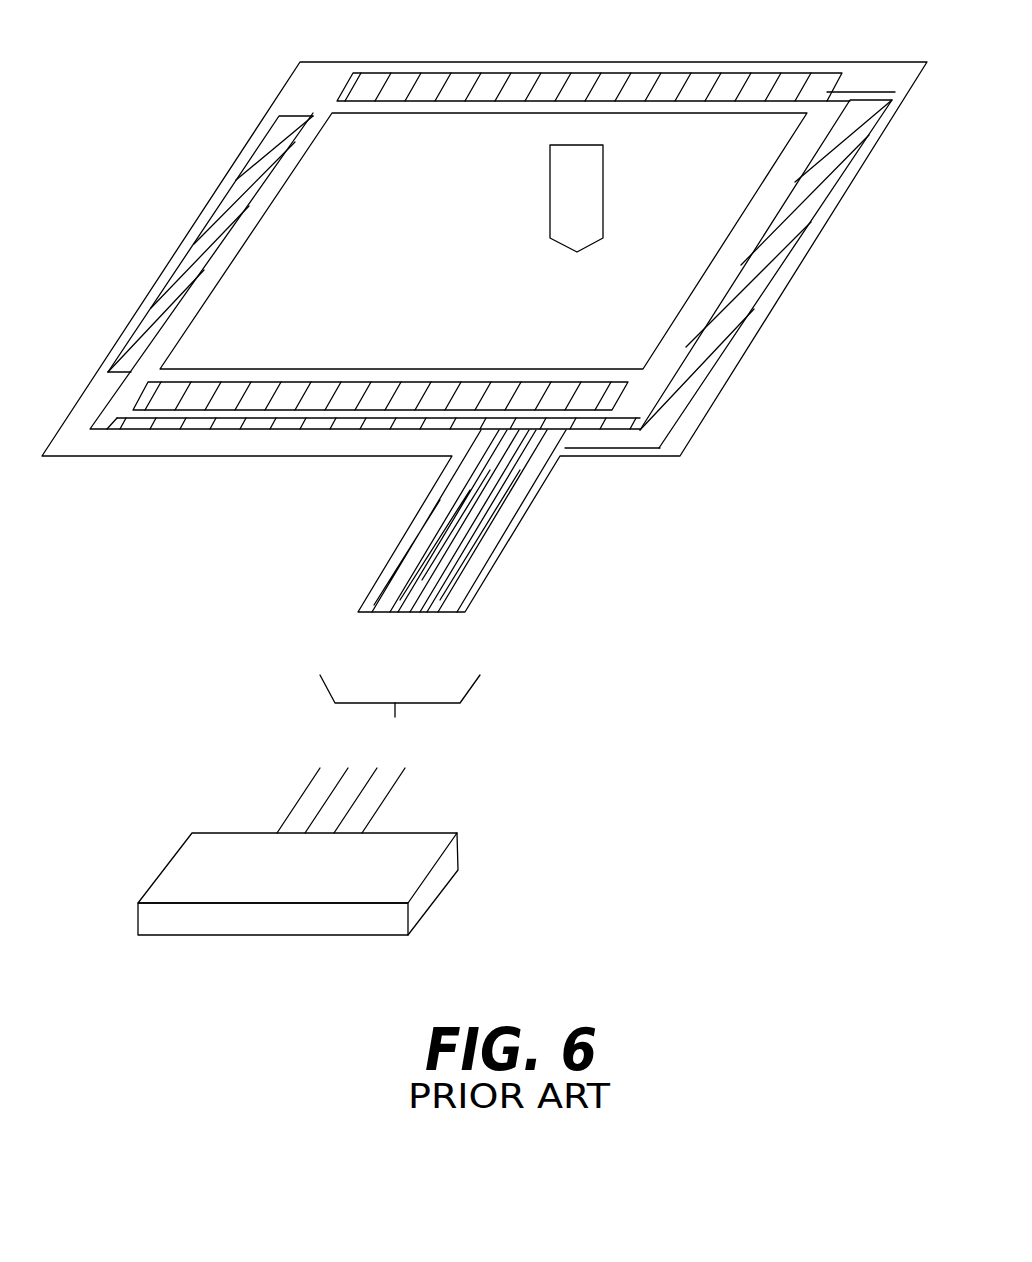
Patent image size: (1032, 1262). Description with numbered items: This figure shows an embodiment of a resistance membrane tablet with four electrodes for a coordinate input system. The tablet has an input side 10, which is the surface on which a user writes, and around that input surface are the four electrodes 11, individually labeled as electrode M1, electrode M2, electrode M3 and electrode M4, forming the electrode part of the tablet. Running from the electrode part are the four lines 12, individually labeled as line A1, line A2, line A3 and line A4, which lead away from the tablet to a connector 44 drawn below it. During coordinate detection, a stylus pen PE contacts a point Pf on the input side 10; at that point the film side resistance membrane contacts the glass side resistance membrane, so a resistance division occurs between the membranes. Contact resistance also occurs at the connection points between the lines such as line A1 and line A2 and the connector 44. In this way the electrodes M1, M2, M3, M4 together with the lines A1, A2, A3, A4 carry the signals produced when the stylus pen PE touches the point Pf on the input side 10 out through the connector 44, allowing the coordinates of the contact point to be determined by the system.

The input side 10 is at (292, 178).
The electrodes 11 is at (743, 255).
The electrode M1 is at (212, 248).
The electrode M2 is at (797, 168).
The electrode M3 is at (260, 397).
The electrode M4 is at (548, 82).
The stylus pen PE is at (604, 170).
The point Pf is at (592, 282).
The line A1 is at (380, 612).
The line A2 is at (421, 614).
The line A3 is at (398, 614).
The line A4 is at (445, 612).
The lines 12 is at (400, 714).
The connector 44 is at (435, 887).